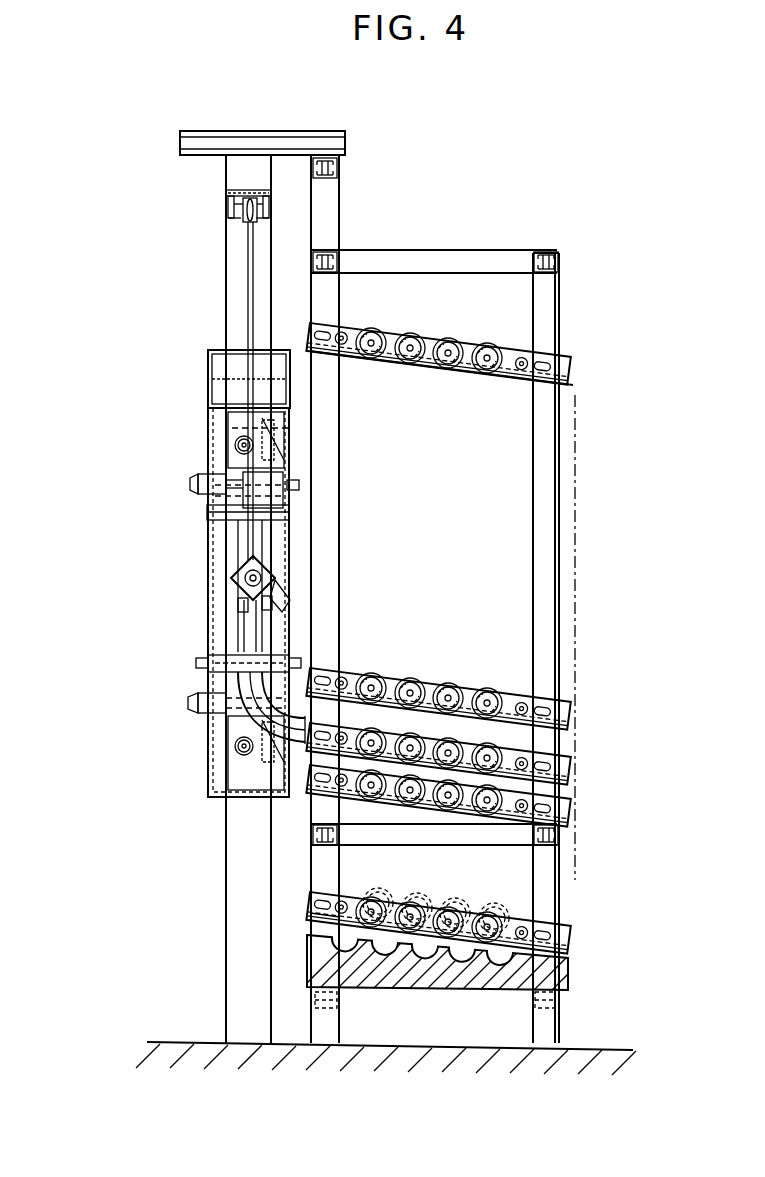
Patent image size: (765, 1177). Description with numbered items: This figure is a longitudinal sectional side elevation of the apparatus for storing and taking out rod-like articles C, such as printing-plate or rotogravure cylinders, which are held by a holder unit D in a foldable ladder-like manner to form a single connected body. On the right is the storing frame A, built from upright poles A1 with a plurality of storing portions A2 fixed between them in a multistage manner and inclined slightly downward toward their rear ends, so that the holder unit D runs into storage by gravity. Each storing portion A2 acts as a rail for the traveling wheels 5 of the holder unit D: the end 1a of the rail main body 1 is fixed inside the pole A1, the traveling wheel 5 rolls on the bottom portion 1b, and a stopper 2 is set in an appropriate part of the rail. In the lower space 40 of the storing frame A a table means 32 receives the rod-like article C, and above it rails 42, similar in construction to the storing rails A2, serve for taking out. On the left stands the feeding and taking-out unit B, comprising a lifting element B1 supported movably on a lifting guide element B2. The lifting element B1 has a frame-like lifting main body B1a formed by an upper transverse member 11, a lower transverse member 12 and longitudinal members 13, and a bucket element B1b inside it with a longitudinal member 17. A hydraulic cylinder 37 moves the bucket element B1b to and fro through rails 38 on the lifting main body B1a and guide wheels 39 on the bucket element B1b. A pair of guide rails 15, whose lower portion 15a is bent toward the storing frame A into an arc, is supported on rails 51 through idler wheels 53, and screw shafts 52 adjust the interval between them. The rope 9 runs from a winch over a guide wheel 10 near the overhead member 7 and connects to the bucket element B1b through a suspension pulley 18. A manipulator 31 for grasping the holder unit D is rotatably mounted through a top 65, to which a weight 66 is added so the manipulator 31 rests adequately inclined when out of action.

The overhead beam 7 is at (262, 150).
The guide wheel 10 is at (270, 193).
The rope 9 is at (256, 266).
The storing frame A is at (634, 285).
The poles A1 is at (334, 292).
The storing portions A2 is at (570, 357).
The rail main body 1 is at (522, 388).
The end of the rail main body 1a is at (565, 695).
The bottom portion of the rail main body 1b is at (565, 716).
The stopper 2 is at (505, 385).
The traveling wheels 5 is at (452, 335).
The rod-like article C is at (373, 331).
The holder unit D is at (510, 338).
The stored article feeding and taking-out unit B is at (131, 225).
The lifting element B1 is at (212, 346).
The lifting guide element B2 is at (227, 252).
The lifting main body B1a is at (292, 392).
The bucket element B1b is at (292, 415).
The upper transverse member 11 is at (286, 348).
The lower transverse member 12 is at (212, 797).
The longitudinal members 13 is at (210, 706).
The guide rails 15 is at (236, 635).
The lower portion of the guide rail 15a is at (305, 698).
The longitudinal member 17 is at (228, 620).
The suspension pulley 18 is at (235, 538).
The manipulator 31 is at (288, 604).
The table means 32 is at (568, 975).
The hydraulic cylinder 37 is at (218, 480).
The rails 38 is at (212, 514).
The guide wheels 39 is at (205, 492).
The lower space 40 is at (508, 882).
The rails 42 is at (325, 915).
The rails 51 is at (270, 462).
The screw shafts 52 is at (240, 443).
The idler wheels 53 is at (290, 428).
The top 65 is at (237, 567).
The weight 66 is at (237, 594).